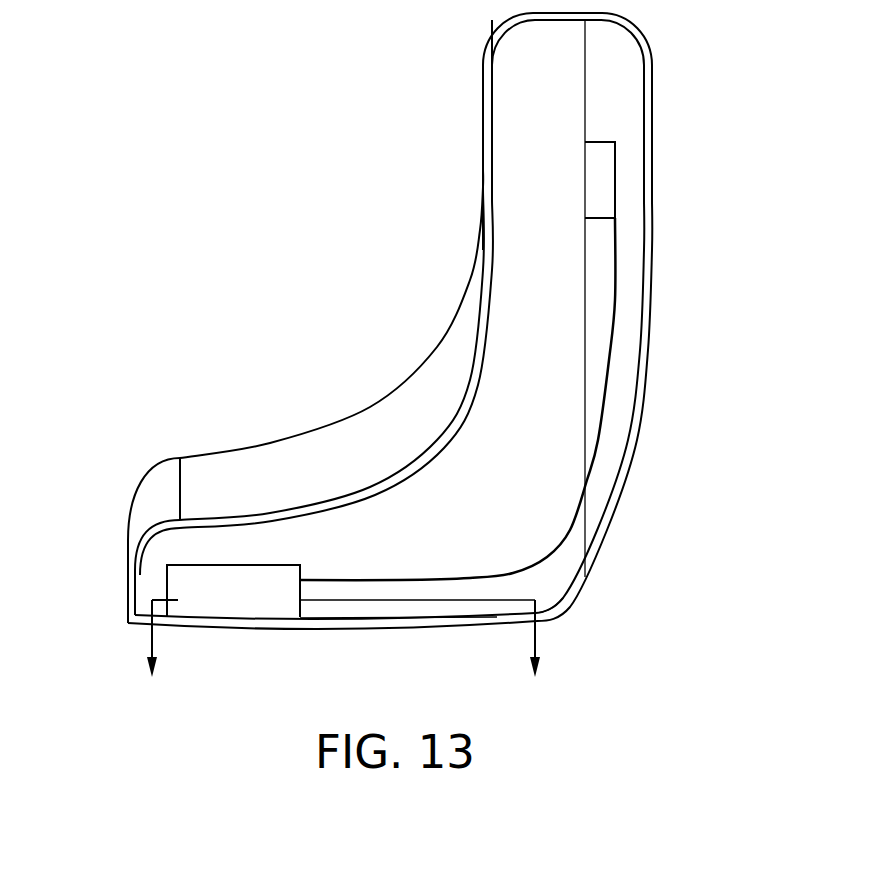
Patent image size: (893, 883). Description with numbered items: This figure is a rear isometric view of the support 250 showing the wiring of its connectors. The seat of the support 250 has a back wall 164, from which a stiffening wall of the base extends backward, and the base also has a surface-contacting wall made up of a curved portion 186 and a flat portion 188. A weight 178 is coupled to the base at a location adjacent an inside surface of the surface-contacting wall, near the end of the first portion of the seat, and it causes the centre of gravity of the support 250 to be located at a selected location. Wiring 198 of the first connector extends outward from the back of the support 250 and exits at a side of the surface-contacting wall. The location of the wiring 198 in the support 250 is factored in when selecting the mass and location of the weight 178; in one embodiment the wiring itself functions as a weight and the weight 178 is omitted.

The support 250 is at (312, 302).
The back wall 164 is at (543, 409).
The wiring 198 is at (615, 263).
The weight 178 is at (187, 578).
The flat portion 188 is at (335, 630).
The curved portion 186 is at (570, 607).